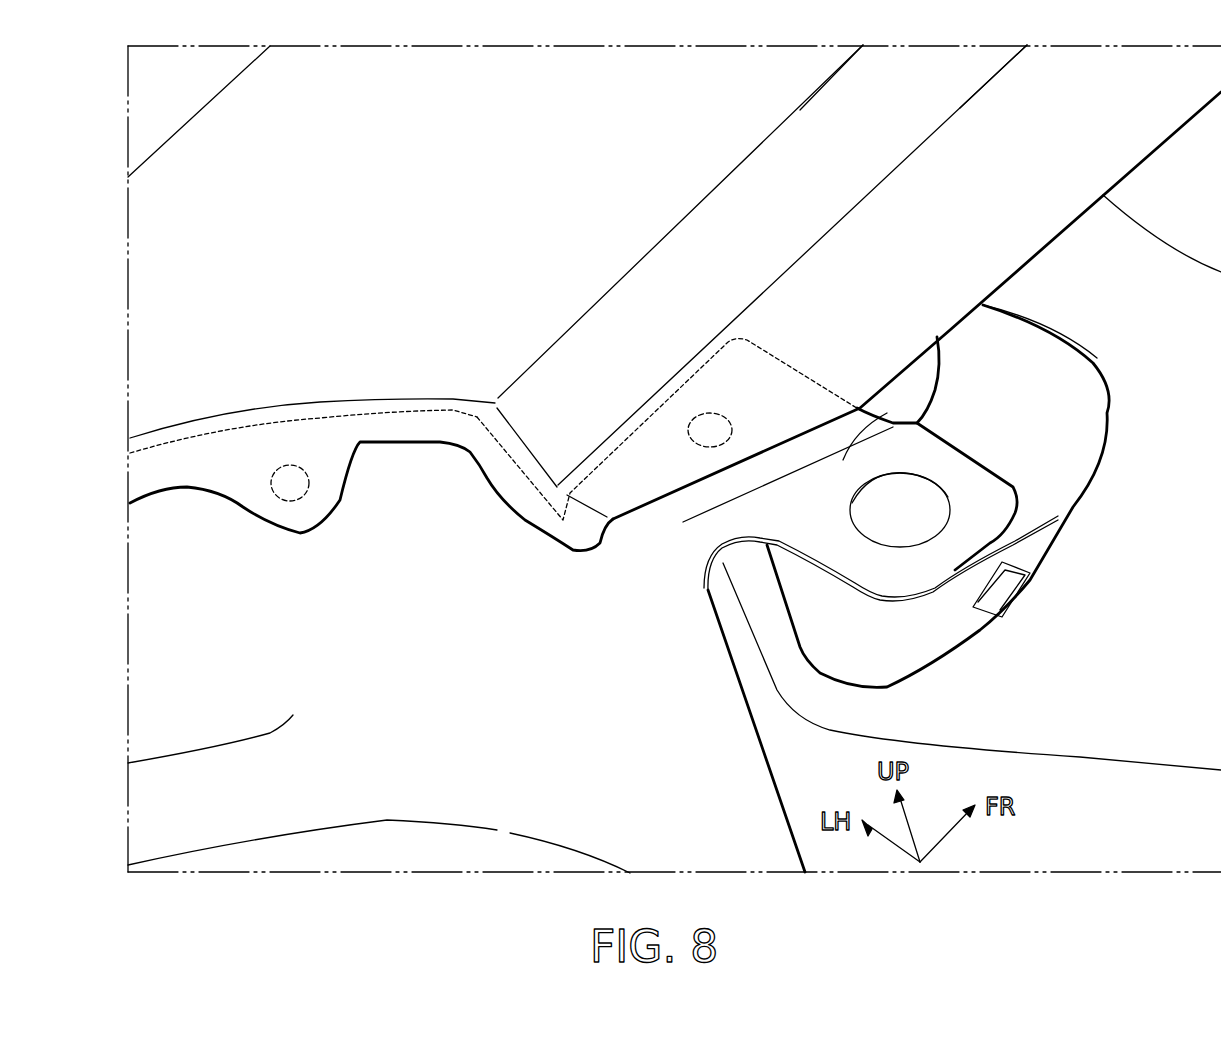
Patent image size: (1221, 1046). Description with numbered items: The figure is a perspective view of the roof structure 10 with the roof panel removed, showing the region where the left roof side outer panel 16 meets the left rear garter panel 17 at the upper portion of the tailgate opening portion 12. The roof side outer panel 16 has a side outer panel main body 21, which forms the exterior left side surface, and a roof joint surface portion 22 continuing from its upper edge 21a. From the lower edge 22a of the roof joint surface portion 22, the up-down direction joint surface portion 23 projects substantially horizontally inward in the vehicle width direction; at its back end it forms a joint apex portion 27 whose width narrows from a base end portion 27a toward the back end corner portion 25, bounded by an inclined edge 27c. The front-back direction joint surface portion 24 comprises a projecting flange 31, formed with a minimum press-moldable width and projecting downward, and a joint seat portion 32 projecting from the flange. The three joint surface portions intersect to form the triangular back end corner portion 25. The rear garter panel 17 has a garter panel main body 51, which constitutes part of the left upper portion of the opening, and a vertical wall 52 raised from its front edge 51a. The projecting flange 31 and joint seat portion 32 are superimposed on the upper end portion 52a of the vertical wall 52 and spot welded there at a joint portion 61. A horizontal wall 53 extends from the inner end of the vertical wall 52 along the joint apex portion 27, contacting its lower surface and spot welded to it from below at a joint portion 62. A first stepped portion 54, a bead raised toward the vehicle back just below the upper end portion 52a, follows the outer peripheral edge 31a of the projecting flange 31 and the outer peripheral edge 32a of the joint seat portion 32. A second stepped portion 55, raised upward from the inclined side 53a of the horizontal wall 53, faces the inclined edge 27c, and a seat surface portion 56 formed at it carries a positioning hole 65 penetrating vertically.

The roof structure 10 is at (180, 85).
The tailgate opening portion 12 is at (125, 618).
The roof side outer panel 16 is at (190, 160).
The rear garter panel 17 is at (328, 873).
The side outer panel main body 21 is at (445, 142).
The upper edge 21a is at (823, 82).
The roof joint surface portion 22 is at (763, 173).
The lower edge 22a is at (933, 118).
The up-down direction joint surface portion 23 is at (1068, 102).
The front-back direction joint surface portion 24 is at (493, 333).
The back end corner portion 25 is at (553, 497).
The joint apex portion 27 is at (733, 397).
The base end portion 27a is at (837, 380).
The inclined edge 27c is at (740, 463).
The projecting flange 31 is at (507, 472).
The outer peripheral edge 31a is at (487, 480).
The joint seat portion 32 is at (263, 495).
The outer peripheral edge 32a is at (263, 527).
The garter panel main body 51 is at (443, 847).
The front edge 51a is at (520, 833).
The vertical wall 52 is at (130, 763).
The upper end portion 52a is at (372, 453).
The horizontal wall 53 is at (787, 447).
The inclined side 53a is at (810, 453).
The first stepped portion 54 is at (482, 535).
The second stepped portion 55 is at (877, 413).
The seat surface portion 56 is at (990, 500).
The joint portion 61 is at (300, 497).
The joint portion 62 is at (693, 420).
The positioning hole 65 is at (883, 543).